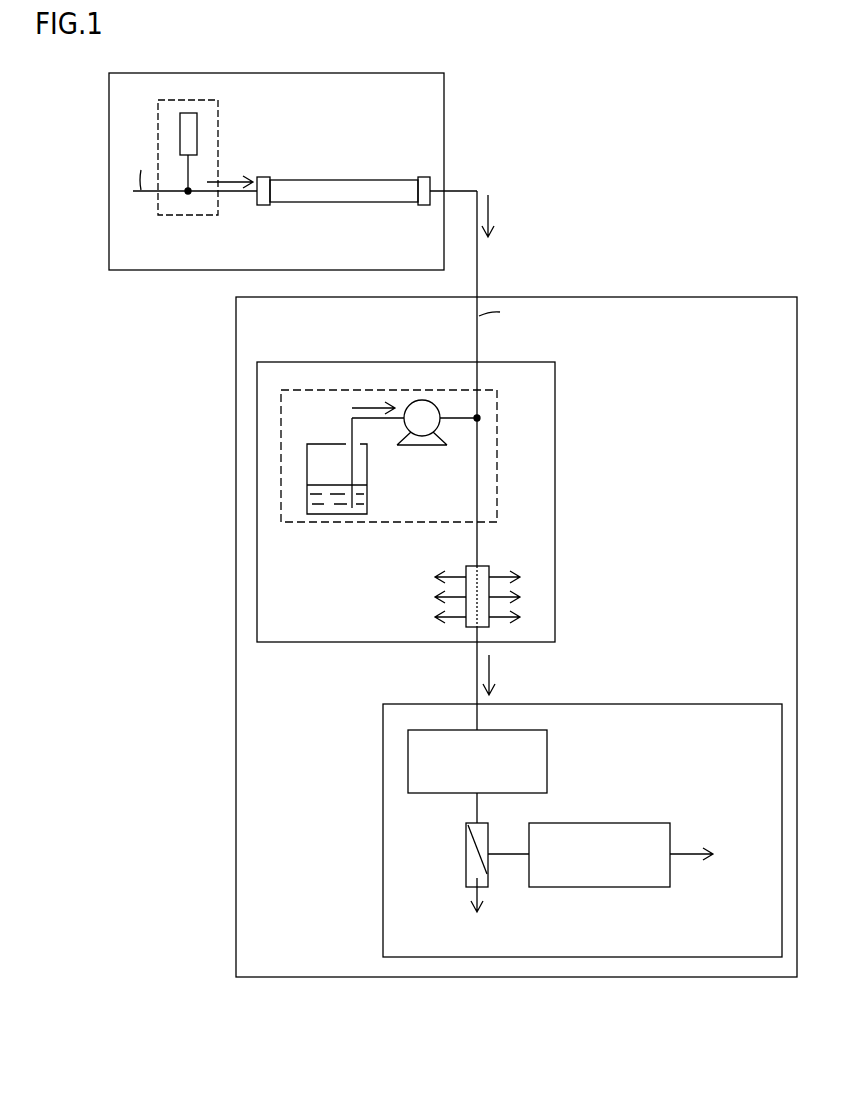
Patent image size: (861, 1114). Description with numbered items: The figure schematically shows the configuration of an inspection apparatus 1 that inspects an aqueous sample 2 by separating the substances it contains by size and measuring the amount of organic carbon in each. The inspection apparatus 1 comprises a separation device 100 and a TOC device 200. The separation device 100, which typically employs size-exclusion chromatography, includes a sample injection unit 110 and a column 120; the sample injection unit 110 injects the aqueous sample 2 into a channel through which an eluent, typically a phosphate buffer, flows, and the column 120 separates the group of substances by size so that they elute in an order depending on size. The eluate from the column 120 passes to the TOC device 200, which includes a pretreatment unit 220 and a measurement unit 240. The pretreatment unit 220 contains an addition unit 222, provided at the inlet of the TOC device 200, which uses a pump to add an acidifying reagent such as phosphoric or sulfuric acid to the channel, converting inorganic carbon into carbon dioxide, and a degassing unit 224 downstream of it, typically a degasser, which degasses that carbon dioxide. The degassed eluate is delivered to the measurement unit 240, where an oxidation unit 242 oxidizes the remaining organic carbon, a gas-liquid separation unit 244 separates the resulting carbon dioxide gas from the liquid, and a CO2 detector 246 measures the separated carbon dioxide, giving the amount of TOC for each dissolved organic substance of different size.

The inspection apparatus 1 is at (572, 154).
The separation device 100 is at (389, 73).
The sample injection unit 110 is at (218, 115).
The aqueous sample 2 is at (197, 133).
The column 120 is at (349, 177).
The TOC device 200 is at (738, 297).
The pretreatment unit 220 is at (556, 386).
The addition unit 222 is at (349, 523).
The degassing unit 224 is at (468, 566).
The measurement unit 240 is at (733, 705).
The oxidation unit 242 is at (505, 730).
The gas-liquid separation unit 244 is at (488, 872).
The CO2 detector 246 is at (625, 887).